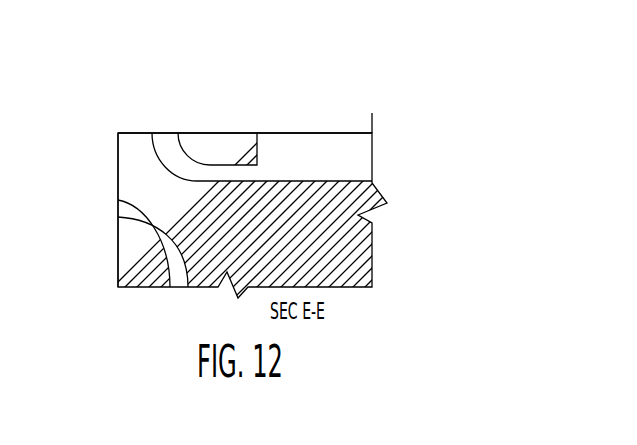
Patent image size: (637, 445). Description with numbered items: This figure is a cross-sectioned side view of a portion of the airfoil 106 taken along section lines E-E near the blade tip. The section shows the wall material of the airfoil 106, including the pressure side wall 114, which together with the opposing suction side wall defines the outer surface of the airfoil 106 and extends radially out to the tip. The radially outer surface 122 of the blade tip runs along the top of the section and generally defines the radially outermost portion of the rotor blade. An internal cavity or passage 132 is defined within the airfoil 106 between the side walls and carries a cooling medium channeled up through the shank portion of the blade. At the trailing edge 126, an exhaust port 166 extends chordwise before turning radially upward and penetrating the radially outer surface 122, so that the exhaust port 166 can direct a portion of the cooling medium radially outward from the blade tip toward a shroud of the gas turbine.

The airfoil 106 is at (402, 78).
The pressure side wall 114 is at (302, 130).
The radially outer surface 122 is at (135, 132).
The trailing edge 126 is at (108, 170).
The internal cavity or passage 132 is at (342, 160).
The exhaust port 166 is at (167, 147).